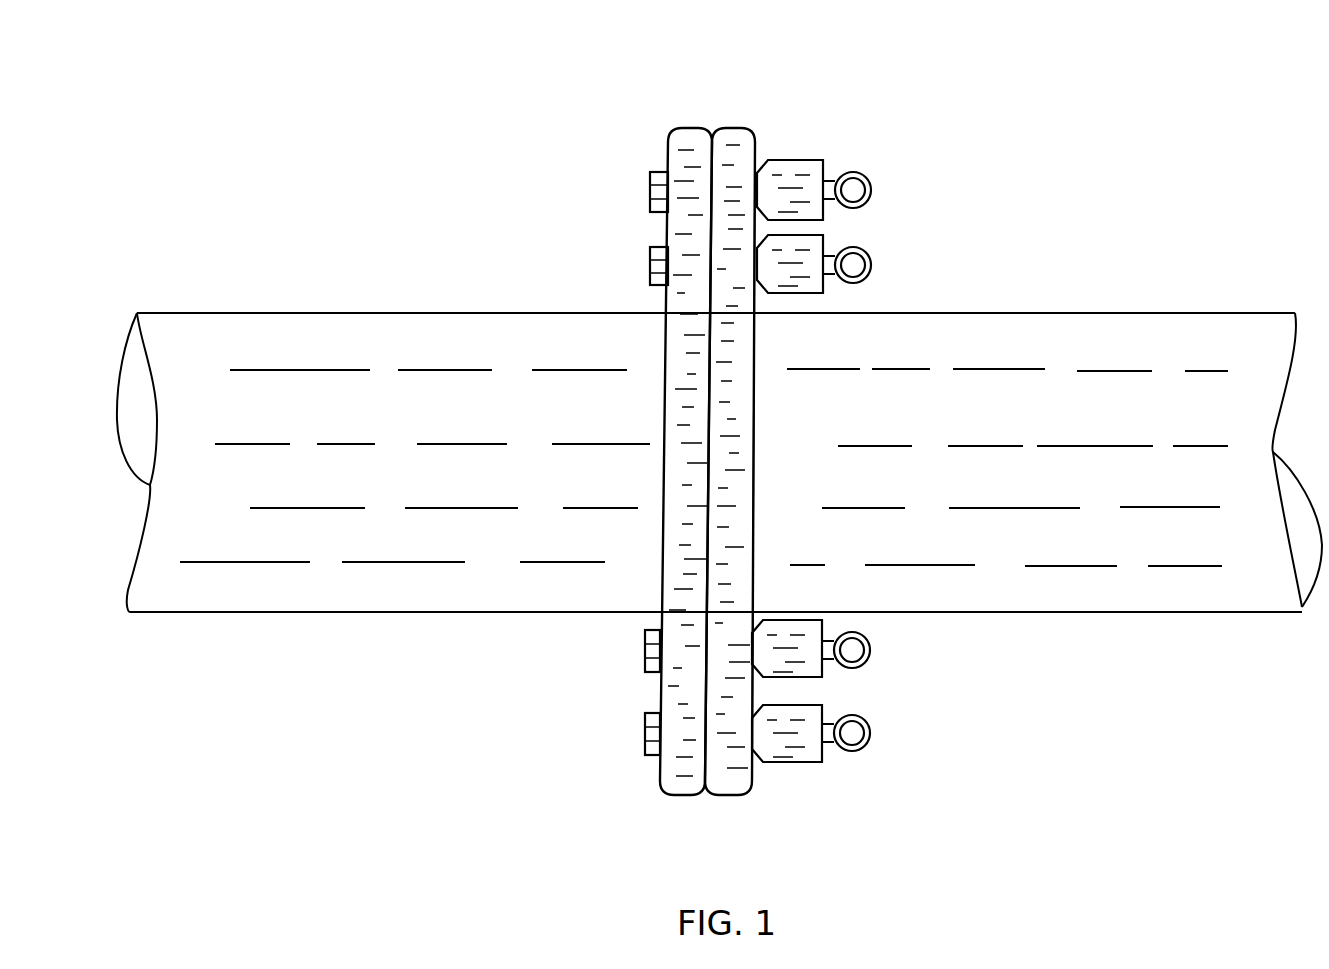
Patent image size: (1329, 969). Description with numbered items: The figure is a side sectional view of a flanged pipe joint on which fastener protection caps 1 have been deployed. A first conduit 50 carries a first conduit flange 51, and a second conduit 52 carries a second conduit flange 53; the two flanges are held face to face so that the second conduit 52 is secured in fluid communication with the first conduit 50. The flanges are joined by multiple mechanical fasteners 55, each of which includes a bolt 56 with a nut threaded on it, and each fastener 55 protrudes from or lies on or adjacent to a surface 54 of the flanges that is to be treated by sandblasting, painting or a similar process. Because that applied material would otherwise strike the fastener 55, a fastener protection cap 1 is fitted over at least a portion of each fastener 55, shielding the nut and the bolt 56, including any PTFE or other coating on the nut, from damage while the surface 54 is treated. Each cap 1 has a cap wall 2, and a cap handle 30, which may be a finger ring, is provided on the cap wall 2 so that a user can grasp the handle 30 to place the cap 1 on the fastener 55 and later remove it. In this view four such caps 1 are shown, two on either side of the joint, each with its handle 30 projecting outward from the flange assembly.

The fastener protection cap 1 is at (890, 228).
The cap wall 2 is at (806, 150).
The cap handle 30 is at (851, 171).
The first conduit 50 is at (555, 335).
The first conduit flange 51 is at (678, 127).
The second conduit 52 is at (1103, 333).
The second conduit flange 53 is at (735, 127).
The surface 54 is at (757, 148).
The mechanical fastener 55 is at (638, 135).
The bolt 56 is at (649, 256).